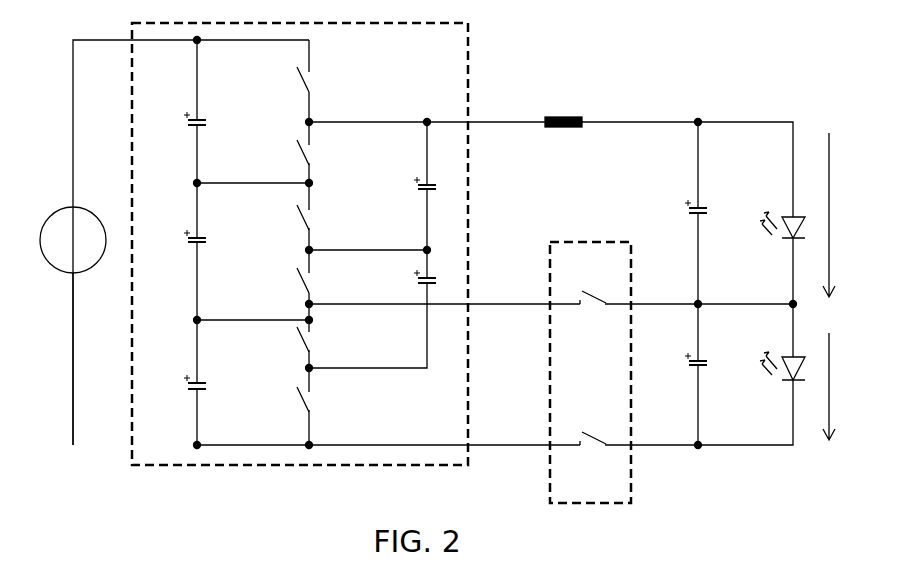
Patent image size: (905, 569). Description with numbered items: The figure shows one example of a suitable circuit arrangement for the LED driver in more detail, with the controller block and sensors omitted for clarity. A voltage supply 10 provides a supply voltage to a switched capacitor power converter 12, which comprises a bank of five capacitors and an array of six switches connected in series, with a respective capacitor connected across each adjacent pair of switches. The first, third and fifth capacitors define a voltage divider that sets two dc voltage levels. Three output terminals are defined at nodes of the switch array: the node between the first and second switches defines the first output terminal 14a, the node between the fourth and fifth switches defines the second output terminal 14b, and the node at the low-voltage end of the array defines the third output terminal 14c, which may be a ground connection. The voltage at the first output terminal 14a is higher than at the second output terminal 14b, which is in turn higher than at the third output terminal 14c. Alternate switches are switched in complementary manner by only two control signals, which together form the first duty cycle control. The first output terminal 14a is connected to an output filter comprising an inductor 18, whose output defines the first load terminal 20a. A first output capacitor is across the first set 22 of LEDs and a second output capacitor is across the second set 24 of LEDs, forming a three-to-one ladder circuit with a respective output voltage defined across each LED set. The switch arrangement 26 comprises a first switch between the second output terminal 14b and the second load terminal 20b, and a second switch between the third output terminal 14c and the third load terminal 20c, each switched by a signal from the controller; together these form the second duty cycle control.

The voltage supply 10 is at (50, 263).
The switched capacitor power converter 12 is at (468, 62).
The first output terminal 14a is at (309, 122).
The second output terminal 14b is at (309, 304).
The third output terminal 14c is at (316, 444).
The inductor 18 is at (573, 117).
The first load terminal 20a is at (698, 122).
The second load terminal 20b is at (698, 304).
The third load terminal 20c is at (698, 445).
The first set of LEDs 22 is at (813, 187).
The second set of LEDs 24 is at (820, 334).
The switch arrangement 26 is at (632, 474).